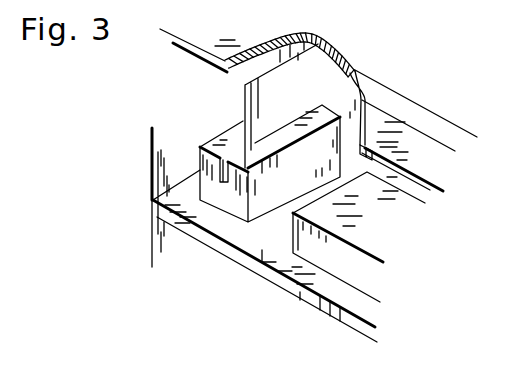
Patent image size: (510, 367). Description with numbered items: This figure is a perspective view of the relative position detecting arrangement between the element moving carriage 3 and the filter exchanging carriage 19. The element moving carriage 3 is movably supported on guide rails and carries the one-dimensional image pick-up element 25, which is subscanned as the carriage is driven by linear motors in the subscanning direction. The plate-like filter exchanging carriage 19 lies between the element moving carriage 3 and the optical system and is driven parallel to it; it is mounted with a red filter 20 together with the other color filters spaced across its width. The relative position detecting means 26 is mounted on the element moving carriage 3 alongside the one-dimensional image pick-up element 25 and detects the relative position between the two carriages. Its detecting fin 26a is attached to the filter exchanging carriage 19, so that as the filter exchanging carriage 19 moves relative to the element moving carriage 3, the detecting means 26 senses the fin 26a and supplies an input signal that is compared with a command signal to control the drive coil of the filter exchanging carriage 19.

The element moving carriage 3 is at (259, 272).
The filter exchanging carriage 19 is at (185, 48).
The red filter 20 is at (447, 135).
The one-dimensional image pick-up element 25 is at (342, 264).
The relative position detecting means 26 is at (222, 200).
The detecting fin 26a is at (246, 95).